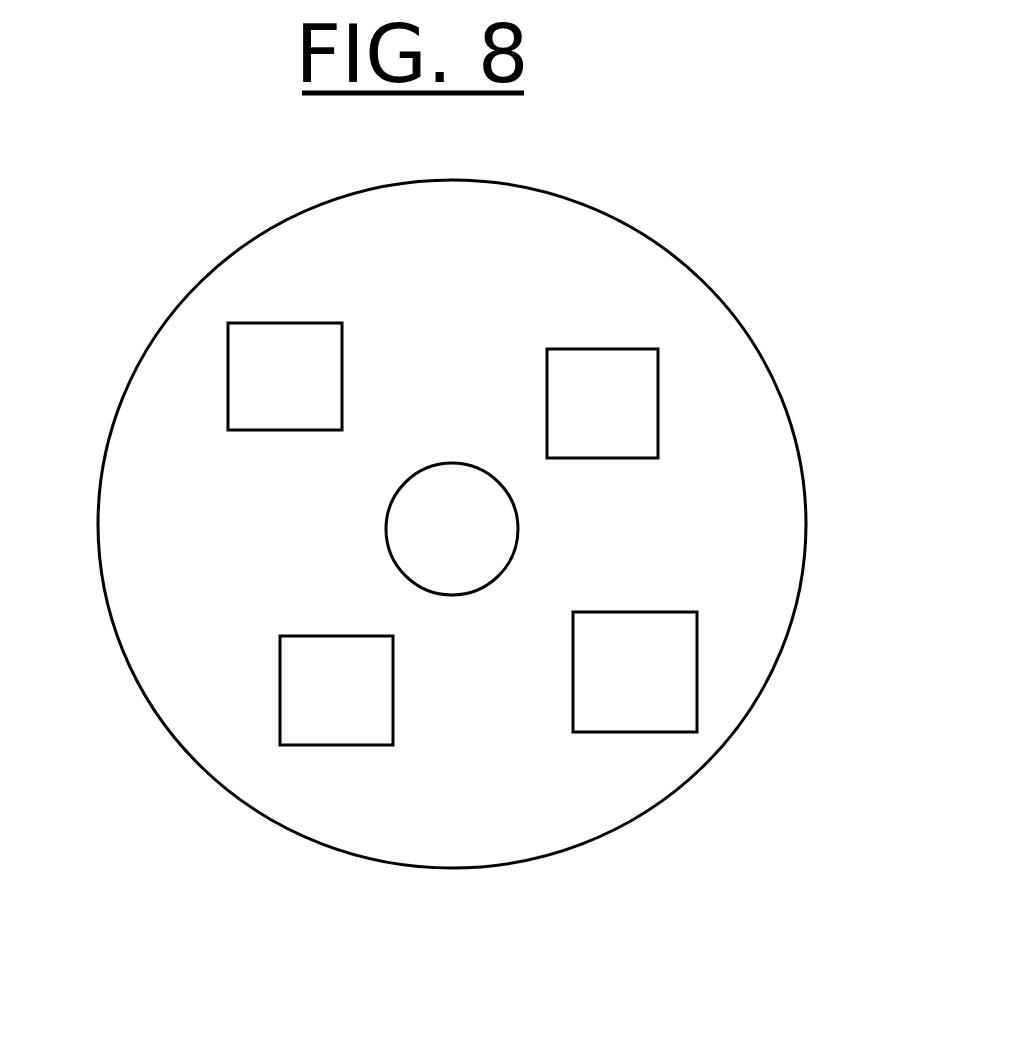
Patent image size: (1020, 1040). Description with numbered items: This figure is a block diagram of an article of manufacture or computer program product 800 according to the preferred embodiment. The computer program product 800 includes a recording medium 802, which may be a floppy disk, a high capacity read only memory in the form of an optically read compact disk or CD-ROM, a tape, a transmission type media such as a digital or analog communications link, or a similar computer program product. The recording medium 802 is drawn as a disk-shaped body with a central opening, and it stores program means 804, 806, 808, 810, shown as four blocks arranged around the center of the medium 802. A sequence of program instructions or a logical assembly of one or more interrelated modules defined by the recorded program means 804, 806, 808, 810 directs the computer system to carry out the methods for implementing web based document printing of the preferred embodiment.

The computer program product 800 is at (760, 294).
The recording medium 802 is at (159, 325).
The program means 804 is at (336, 690).
The program means 806 is at (635, 672).
The program means 808 is at (602, 403).
The program means 810 is at (285, 376).